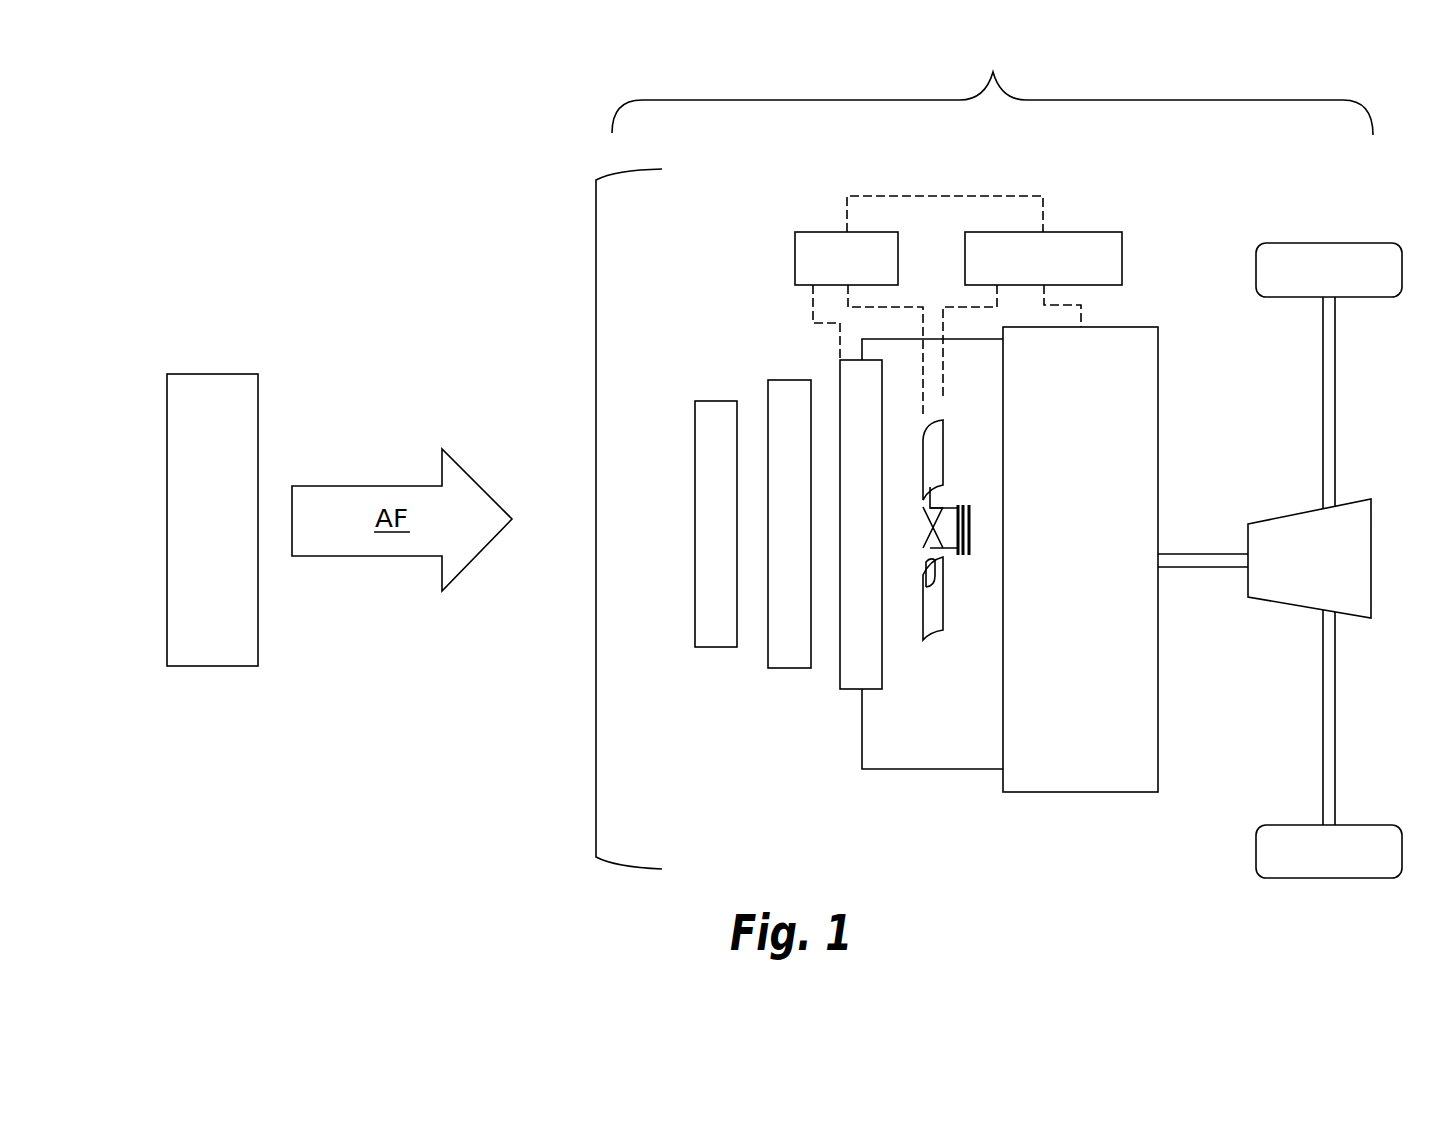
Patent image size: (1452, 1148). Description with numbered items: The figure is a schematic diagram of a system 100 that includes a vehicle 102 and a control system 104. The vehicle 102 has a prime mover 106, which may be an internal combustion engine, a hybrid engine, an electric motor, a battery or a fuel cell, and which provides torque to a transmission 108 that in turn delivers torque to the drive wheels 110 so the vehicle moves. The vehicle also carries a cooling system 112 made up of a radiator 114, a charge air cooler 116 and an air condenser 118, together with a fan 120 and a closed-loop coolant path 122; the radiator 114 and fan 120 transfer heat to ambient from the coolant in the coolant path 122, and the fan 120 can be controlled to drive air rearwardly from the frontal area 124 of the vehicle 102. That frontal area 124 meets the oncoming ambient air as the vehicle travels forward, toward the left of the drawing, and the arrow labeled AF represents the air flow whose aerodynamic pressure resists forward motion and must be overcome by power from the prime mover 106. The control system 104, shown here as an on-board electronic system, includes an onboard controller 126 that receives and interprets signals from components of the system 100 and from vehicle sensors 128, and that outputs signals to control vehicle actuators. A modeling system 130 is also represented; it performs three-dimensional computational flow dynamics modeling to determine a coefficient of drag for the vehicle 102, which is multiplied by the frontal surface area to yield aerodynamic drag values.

The system 100 is at (480, 714).
The vehicle 102 is at (992, 87).
The control system 104 is at (1057, 187).
The prime mover 106 is at (1100, 535).
The transmission 108 is at (1330, 575).
The drive wheels 110 is at (1265, 243).
The cooling system 112 is at (853, 788).
The radiator 114 is at (847, 693).
The charge air cooler 116 is at (778, 669).
The air condenser 118 is at (707, 400).
The fan 120 is at (972, 530).
The coolant path 122 is at (977, 772).
The frontal area 124 is at (596, 291).
The onboard controller 126 is at (1097, 231).
The sensors 128 is at (824, 253).
The modeling system 130 is at (230, 532).